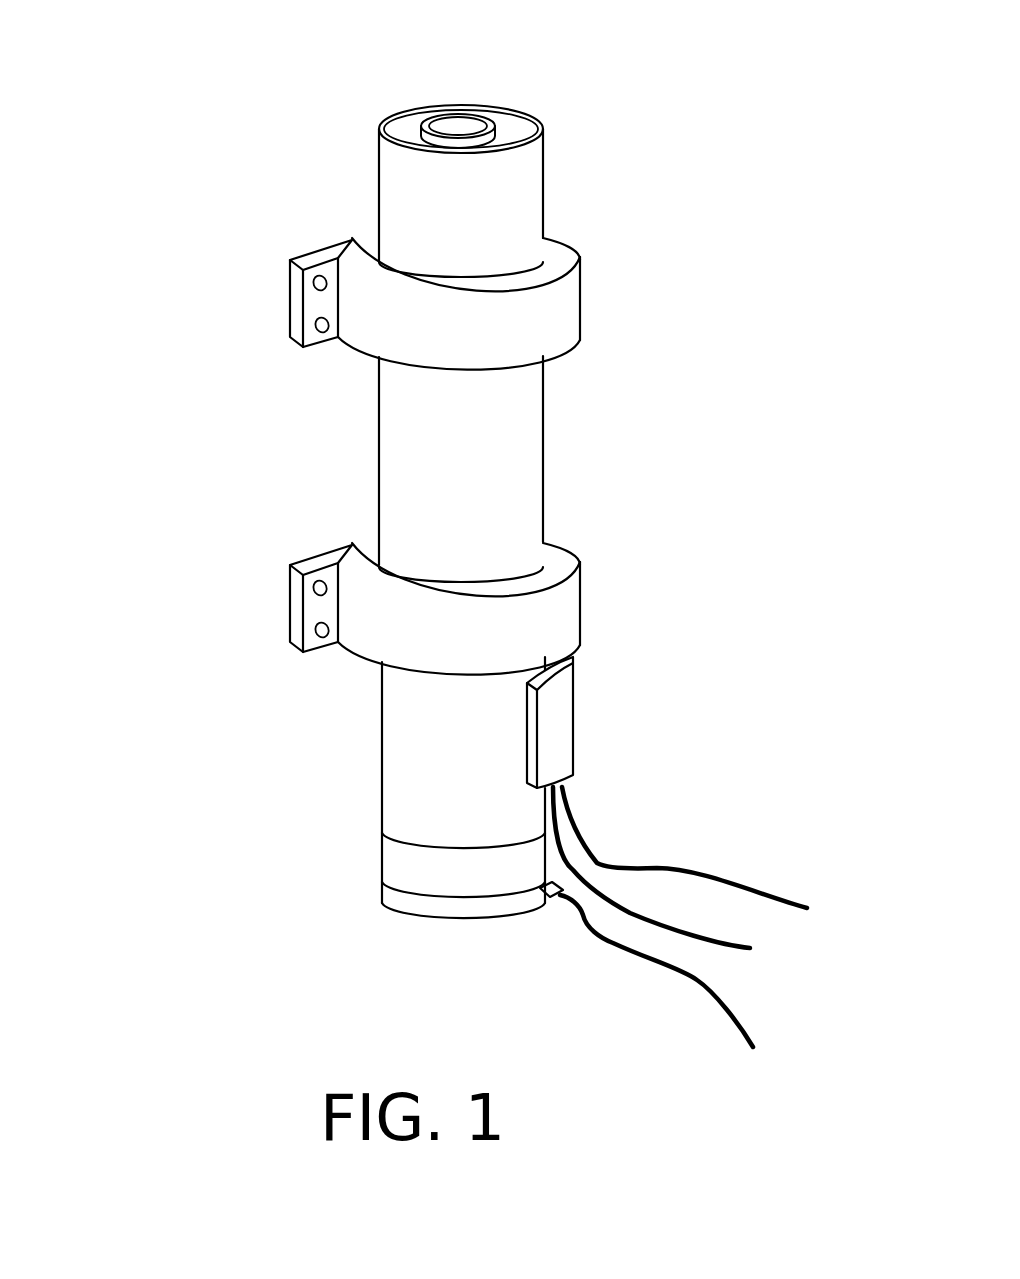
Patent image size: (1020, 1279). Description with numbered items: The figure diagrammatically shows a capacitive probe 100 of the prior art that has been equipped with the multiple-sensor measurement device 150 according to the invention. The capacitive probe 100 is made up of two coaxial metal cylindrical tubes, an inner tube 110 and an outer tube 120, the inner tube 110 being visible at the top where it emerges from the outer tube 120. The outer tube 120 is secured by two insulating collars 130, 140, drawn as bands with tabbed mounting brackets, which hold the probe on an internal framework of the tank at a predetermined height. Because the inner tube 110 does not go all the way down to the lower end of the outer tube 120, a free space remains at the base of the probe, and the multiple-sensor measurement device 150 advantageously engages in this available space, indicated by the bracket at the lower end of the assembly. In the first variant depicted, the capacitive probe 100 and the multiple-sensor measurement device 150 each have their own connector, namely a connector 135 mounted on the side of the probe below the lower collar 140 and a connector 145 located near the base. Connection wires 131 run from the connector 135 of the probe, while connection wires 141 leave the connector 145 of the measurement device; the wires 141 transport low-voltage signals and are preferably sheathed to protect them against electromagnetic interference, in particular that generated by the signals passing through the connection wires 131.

The capacitive probe 100 is at (145, 109).
The inner tube 110 is at (480, 120).
The outer tube 120 is at (388, 177).
The insulating collar 130 is at (560, 296).
The connection wires 131 is at (683, 872).
The connector 135 is at (560, 718).
The insulating collar 140 is at (562, 622).
The connection wires 141 is at (728, 1008).
The connector 145 is at (550, 897).
The multiple-sensor measurement device 150 is at (145, 850).